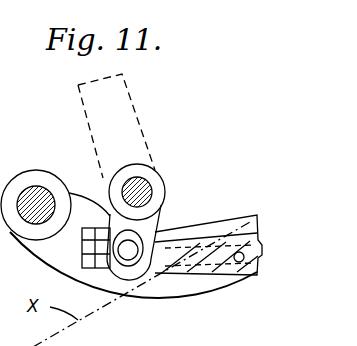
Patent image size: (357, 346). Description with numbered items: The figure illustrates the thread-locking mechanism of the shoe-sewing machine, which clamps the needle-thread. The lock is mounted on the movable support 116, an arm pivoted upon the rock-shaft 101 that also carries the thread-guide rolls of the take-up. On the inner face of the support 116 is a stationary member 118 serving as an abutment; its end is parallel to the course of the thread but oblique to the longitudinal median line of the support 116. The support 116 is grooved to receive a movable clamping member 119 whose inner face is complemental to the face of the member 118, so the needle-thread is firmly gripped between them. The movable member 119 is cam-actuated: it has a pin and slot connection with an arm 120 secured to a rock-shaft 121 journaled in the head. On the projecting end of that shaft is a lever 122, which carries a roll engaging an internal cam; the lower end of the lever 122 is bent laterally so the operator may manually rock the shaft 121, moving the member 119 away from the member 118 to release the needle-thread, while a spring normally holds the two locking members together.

The rock-shaft 101 is at (38, 187).
The movable support 116 is at (55, 257).
The stationary member 118 is at (240, 263).
The movable clamping member 119 is at (158, 258).
The arm 120 is at (168, 218).
The rock-shaft 121 is at (157, 170).
The lever 122 is at (132, 102).